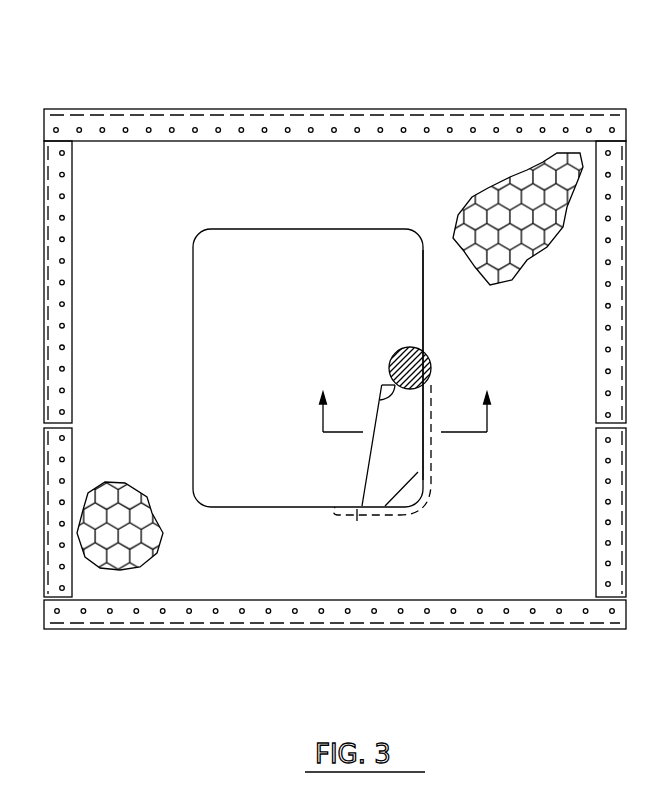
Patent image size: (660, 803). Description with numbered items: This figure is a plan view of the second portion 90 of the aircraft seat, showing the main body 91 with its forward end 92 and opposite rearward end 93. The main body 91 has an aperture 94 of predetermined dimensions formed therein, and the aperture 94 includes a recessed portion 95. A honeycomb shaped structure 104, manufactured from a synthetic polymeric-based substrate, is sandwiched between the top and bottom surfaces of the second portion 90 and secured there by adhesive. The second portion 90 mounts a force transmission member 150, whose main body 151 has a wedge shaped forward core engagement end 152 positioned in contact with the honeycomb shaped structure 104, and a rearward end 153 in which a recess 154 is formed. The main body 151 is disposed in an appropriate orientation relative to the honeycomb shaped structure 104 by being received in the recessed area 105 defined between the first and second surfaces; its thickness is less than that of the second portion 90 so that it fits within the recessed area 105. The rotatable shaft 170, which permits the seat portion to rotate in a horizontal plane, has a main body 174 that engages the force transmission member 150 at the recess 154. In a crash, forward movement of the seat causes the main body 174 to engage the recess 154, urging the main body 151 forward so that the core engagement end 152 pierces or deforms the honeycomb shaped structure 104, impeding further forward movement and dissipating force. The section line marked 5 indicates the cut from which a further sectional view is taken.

The second portion 90 is at (335, 358).
The main body 91 is at (293, 119).
The forward end 92 is at (263, 603).
The rearward end 93 is at (188, 119).
The aperture 94 is at (340, 262).
The recessed portion 95 is at (431, 383).
The honeycomb shaped structure 104 is at (553, 183).
The recessed area 105 is at (433, 475).
The force transmission member 150 is at (404, 428).
The main body 151 is at (382, 463).
The core engagement end 152 is at (400, 490).
The rearward end 153 is at (405, 404).
The recess 154 is at (380, 402).
The rotatable shaft 170 is at (432, 335).
The main body 174 is at (427, 356).
The section line 5 is at (404, 394).